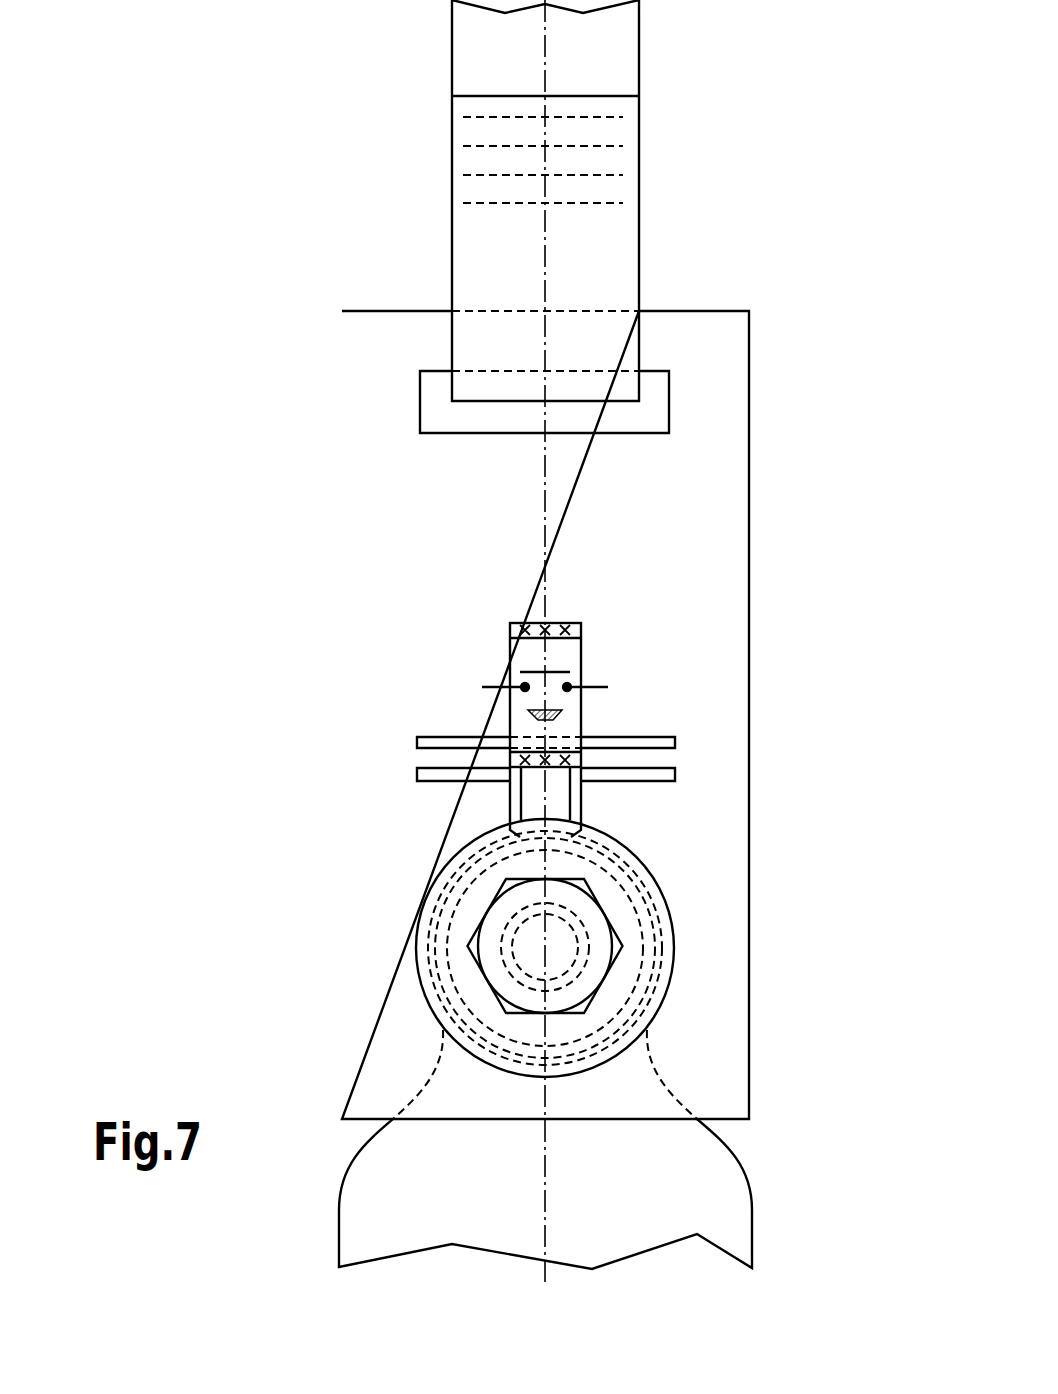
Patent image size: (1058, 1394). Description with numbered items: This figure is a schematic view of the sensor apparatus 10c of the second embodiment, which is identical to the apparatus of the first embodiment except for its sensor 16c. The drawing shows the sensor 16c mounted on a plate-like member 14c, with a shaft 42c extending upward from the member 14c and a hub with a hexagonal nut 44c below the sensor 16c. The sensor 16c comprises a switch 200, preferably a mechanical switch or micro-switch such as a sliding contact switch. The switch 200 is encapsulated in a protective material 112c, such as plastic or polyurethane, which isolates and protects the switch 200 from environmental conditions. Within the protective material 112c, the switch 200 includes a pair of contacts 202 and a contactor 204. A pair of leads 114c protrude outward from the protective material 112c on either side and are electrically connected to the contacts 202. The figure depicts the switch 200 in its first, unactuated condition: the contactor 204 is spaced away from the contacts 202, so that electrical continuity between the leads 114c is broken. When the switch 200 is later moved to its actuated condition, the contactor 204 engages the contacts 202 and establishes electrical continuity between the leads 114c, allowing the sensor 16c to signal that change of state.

The apparatus 10c is at (240, 633).
The mounting plate 14c is at (687, 537).
The sensor 16c is at (522, 657).
The shaft 42c is at (506, 555).
The hub nut 44c is at (610, 897).
The protective material 112c is at (575, 664).
The leads 114c is at (482, 688).
The switch 200 is at (493, 726).
The contacts 202 is at (525, 687).
The contactor 204 is at (559, 672).